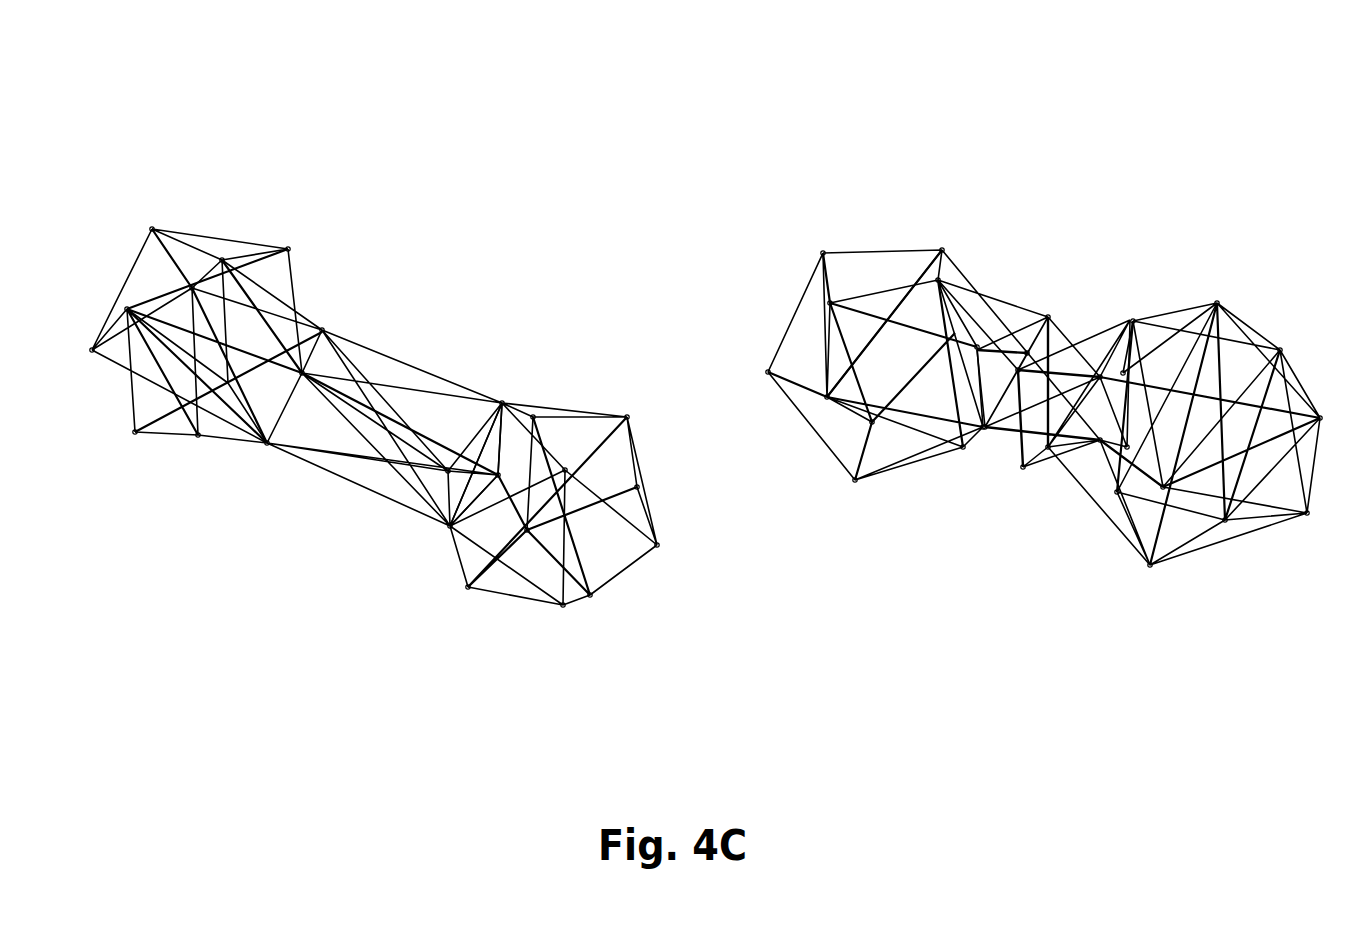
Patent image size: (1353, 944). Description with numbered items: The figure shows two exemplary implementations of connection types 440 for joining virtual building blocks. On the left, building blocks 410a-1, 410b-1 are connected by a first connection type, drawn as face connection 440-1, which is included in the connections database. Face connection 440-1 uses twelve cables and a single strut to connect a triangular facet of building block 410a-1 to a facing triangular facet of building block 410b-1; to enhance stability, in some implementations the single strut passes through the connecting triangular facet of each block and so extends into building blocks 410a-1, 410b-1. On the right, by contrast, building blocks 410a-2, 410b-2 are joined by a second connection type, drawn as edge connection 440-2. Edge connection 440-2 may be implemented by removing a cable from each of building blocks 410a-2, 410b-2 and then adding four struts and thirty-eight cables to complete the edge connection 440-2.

The connection types 440 is at (1195, 95).
The face connection 440-1 is at (511, 383).
The edge connection 440-2 is at (1097, 323).
The building block 410a-1 is at (165, 468).
The building block 410b-1 is at (490, 625).
The building block 410a-2 is at (838, 493).
The building block 410b-2 is at (1102, 568).